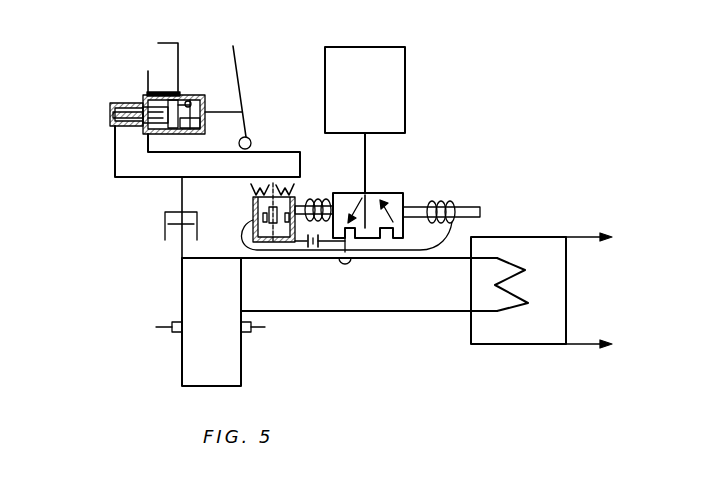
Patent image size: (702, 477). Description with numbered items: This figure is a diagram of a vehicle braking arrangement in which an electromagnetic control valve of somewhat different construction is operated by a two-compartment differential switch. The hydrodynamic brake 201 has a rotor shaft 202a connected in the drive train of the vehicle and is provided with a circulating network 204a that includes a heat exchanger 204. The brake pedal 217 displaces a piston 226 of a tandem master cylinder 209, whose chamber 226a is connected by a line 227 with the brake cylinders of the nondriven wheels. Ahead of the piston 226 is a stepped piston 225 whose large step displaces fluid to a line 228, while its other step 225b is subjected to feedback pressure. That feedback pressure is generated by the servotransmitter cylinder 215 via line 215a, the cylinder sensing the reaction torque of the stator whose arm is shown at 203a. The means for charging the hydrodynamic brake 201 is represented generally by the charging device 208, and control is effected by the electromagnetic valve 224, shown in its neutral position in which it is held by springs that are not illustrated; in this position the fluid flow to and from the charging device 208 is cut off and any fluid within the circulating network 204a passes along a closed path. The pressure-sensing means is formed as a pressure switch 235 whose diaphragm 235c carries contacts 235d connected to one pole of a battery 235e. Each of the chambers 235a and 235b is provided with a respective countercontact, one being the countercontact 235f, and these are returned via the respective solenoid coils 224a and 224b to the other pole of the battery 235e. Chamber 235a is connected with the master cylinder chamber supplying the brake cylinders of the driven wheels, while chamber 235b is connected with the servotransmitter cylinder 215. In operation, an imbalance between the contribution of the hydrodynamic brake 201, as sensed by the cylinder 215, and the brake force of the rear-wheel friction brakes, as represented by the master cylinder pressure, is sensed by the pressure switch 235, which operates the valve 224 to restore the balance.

The hydrodynamic brake 201 is at (185, 356).
The rotor shaft 202a is at (265, 328).
The stator arm 203a is at (182, 238).
The heat exchanger 204 is at (528, 340).
The circulating network 204a is at (408, 309).
The charging device 208 is at (403, 103).
The tandem master cylinder 209 is at (115, 97).
The servotransmitter cylinder 215 is at (165, 219).
The line 215a is at (167, 178).
The brake pedal 217 is at (241, 98).
The electromagnetic valve 224 is at (394, 192).
The solenoid coil 224a is at (440, 204).
The solenoid coil 224b is at (478, 210).
The stepped piston 225 is at (113, 127).
The other step of stepped piston 225b is at (147, 109).
The piston 226 is at (172, 134).
The chamber 226a is at (190, 100).
The line 227 is at (173, 42).
The line 228 is at (148, 71).
The pressure switch 235 is at (270, 243).
The chamber 235a is at (284, 185).
The chamber 235b is at (254, 190).
The diaphragm 235c is at (240, 237).
The contacts 235d is at (291, 192).
The battery 235e is at (314, 249).
The countercontact 235f is at (291, 208).